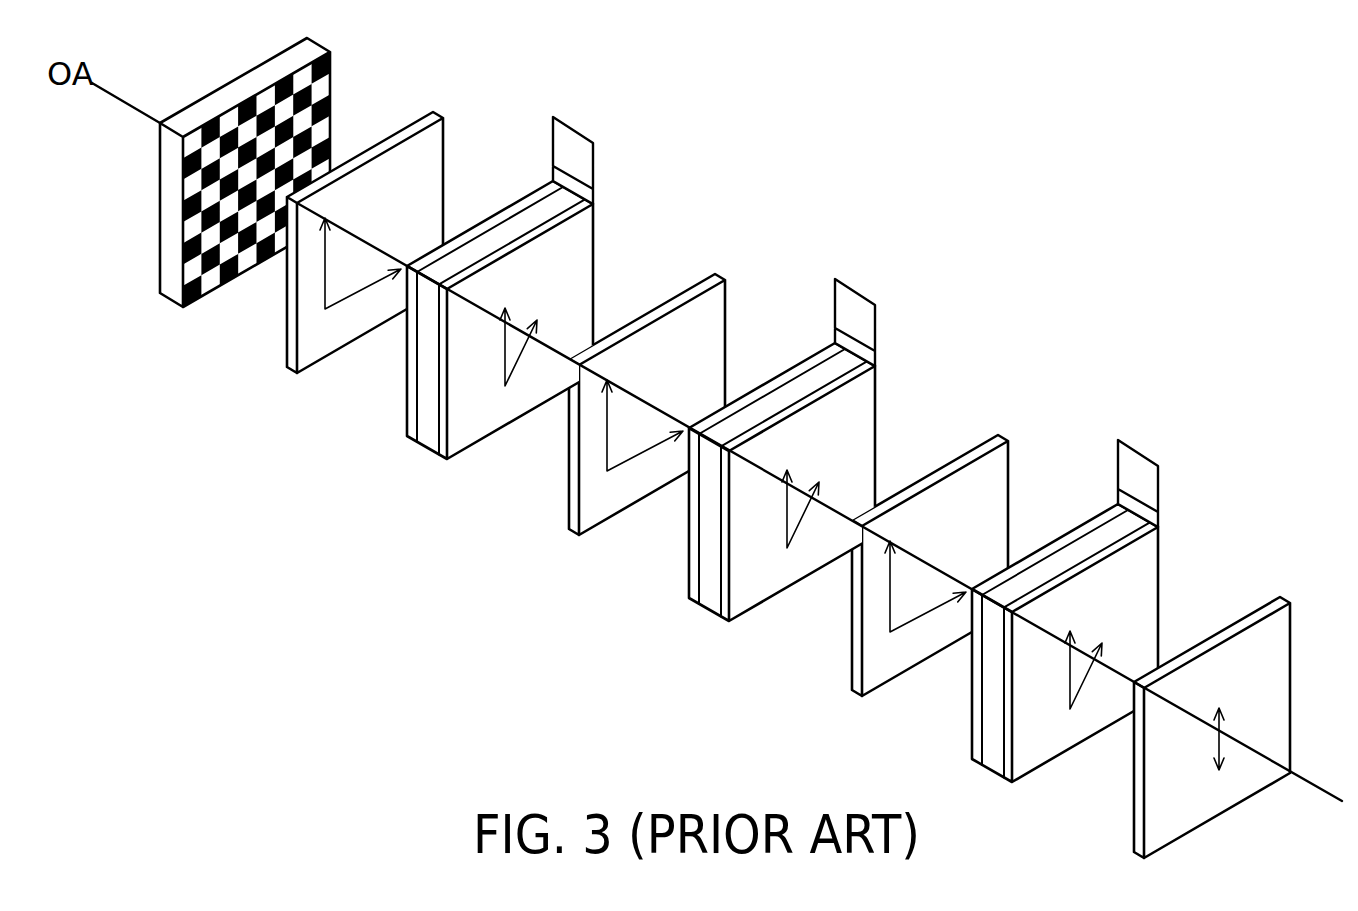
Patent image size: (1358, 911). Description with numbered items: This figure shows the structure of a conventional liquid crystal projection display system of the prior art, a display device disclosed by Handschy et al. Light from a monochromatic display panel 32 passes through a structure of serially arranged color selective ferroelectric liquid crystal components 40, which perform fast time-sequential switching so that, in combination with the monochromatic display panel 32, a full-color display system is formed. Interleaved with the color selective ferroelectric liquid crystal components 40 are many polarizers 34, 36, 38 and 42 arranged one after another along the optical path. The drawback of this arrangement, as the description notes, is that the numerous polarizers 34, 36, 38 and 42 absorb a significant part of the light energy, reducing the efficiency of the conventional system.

The monochromatic display panel 32 is at (291, 46).
The polarizer 34 is at (422, 118).
The polarizer 36 is at (704, 280).
The polarizer 38 is at (987, 441).
The color selective ferroelectric liquid crystal components 40 is at (578, 132).
The polarizer 42 is at (1269, 603).